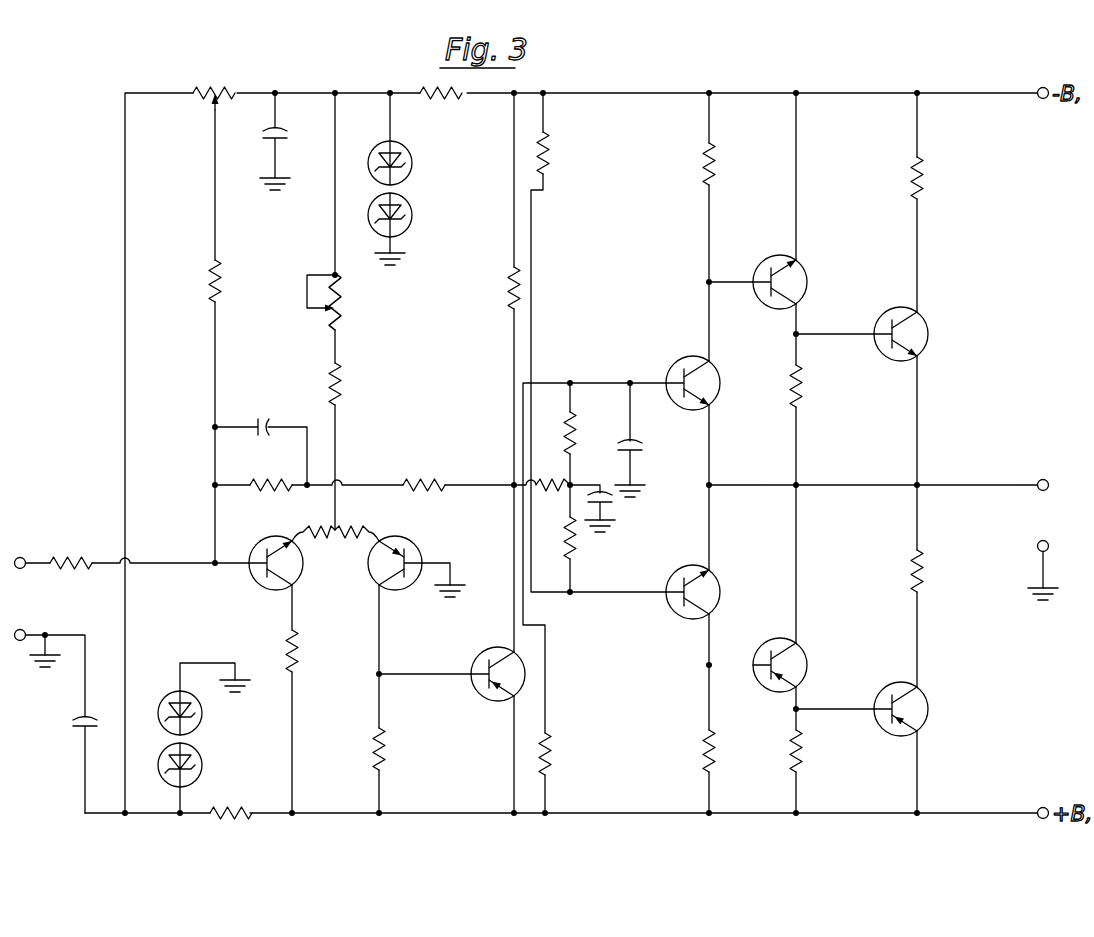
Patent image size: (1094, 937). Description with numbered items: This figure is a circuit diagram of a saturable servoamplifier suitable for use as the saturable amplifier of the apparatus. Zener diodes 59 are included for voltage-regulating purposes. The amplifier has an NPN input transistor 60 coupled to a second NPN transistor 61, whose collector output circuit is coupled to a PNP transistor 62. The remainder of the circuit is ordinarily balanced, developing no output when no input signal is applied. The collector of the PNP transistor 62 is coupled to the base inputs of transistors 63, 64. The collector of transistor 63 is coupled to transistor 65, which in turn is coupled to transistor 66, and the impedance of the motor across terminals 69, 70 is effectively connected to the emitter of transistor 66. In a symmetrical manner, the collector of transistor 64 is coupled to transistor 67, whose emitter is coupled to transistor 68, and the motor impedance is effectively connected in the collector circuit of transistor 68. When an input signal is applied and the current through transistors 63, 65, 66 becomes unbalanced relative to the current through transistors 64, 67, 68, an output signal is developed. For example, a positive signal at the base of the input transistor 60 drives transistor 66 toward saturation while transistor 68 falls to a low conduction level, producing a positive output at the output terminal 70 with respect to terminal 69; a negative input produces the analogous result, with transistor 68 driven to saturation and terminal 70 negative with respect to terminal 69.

The Zener diodes 59 is at (413, 162).
The NPN input transistor 60 is at (300, 572).
The second NPN transistor 61 is at (413, 543).
The PNP transistor 62 is at (483, 651).
The transistor 63 is at (679, 361).
The transistor 64 is at (680, 571).
The transistor 65 is at (773, 256).
The transistor 66 is at (896, 308).
The transistor 67 is at (776, 639).
The transistor 68 is at (893, 683).
The terminal 69 is at (1038, 480).
The output terminal 70 is at (1037, 546).